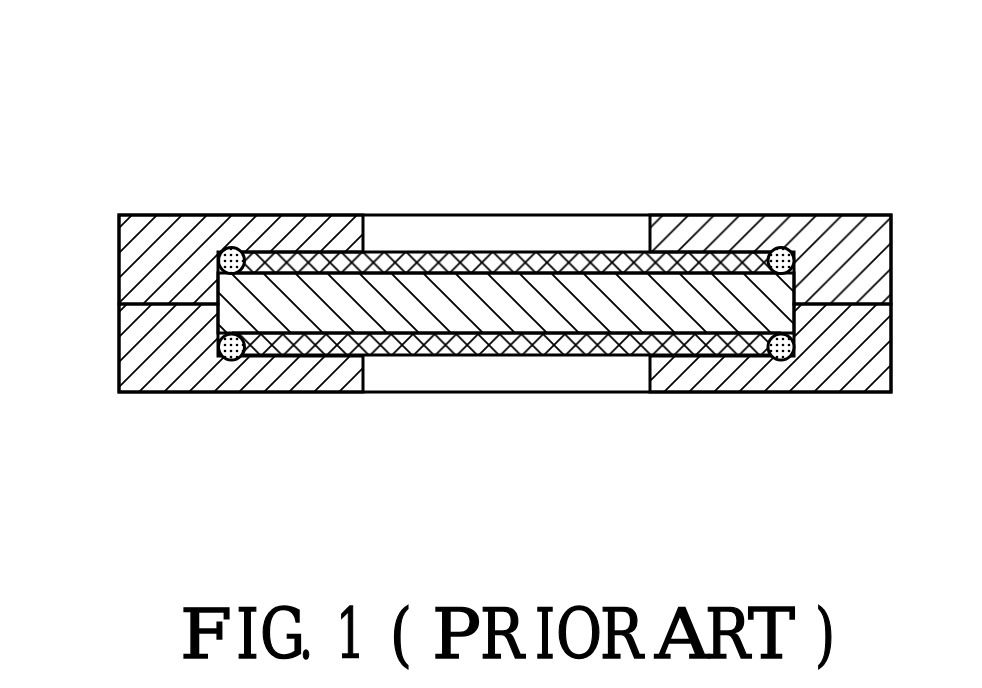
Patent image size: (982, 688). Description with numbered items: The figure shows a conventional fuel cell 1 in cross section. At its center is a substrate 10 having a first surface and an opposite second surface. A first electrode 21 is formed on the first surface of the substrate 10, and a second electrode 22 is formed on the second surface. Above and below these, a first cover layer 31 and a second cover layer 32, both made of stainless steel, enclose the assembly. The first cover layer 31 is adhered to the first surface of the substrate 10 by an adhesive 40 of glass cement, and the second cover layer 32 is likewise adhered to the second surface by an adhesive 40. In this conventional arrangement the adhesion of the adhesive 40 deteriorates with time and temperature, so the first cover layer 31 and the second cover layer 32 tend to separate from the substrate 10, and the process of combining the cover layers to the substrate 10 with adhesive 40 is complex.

The fuel cell 1 is at (44, 47).
The substrate 10 is at (538, 287).
The first electrode 21 is at (450, 258).
The second electrode 22 is at (449, 348).
The first cover layer 31 is at (865, 232).
The second cover layer 32 is at (867, 376).
The adhesive 40 is at (779, 250).